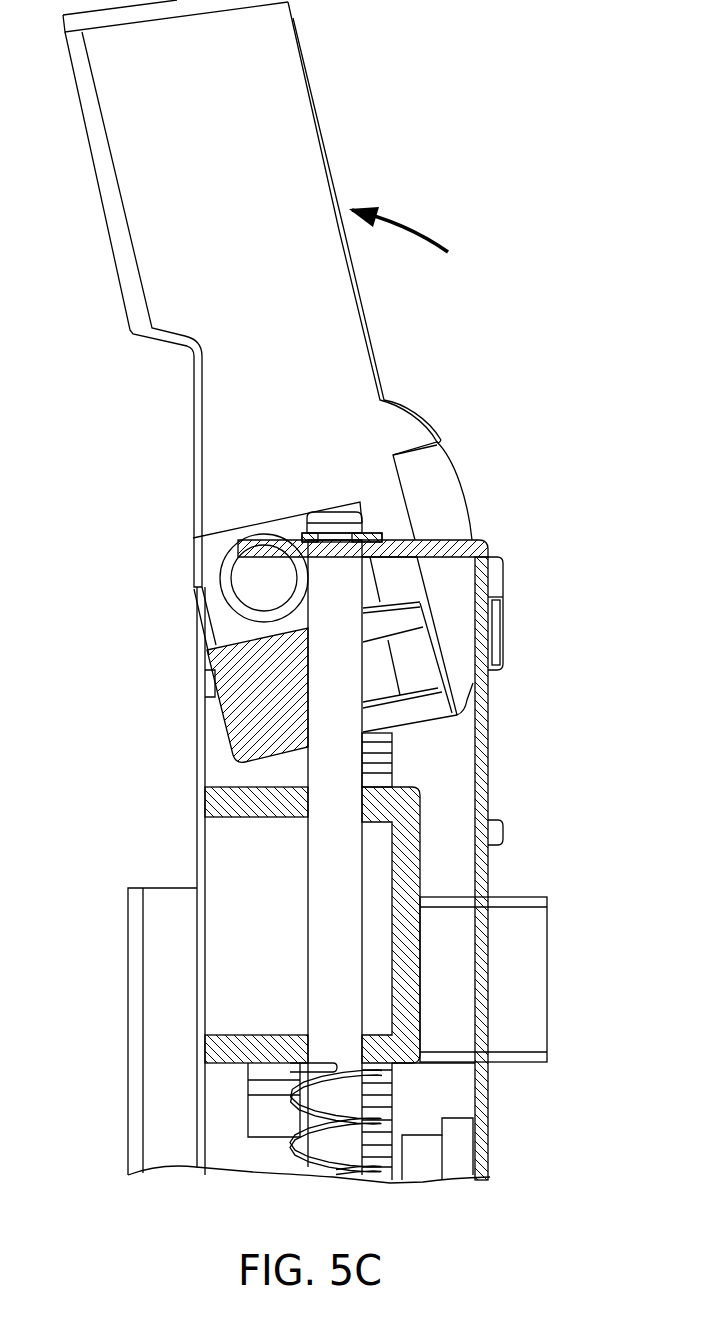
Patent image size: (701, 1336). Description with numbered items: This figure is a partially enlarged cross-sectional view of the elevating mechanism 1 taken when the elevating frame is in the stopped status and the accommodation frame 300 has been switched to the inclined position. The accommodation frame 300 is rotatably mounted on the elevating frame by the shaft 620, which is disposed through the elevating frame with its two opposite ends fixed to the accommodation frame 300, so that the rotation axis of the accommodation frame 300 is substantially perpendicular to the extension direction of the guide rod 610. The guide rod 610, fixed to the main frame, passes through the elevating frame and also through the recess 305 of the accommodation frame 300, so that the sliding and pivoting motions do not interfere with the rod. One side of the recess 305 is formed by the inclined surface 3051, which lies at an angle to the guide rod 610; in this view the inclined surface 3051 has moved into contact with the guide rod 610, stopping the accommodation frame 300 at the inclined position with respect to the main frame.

The elevating mechanism 1 is at (124, 472).
The accommodation frame 300 is at (310, 128).
The recess 305 is at (397, 672).
The inclined surface 3051 is at (322, 697).
The guide rod 610 is at (337, 860).
The shaft 620 is at (262, 580).